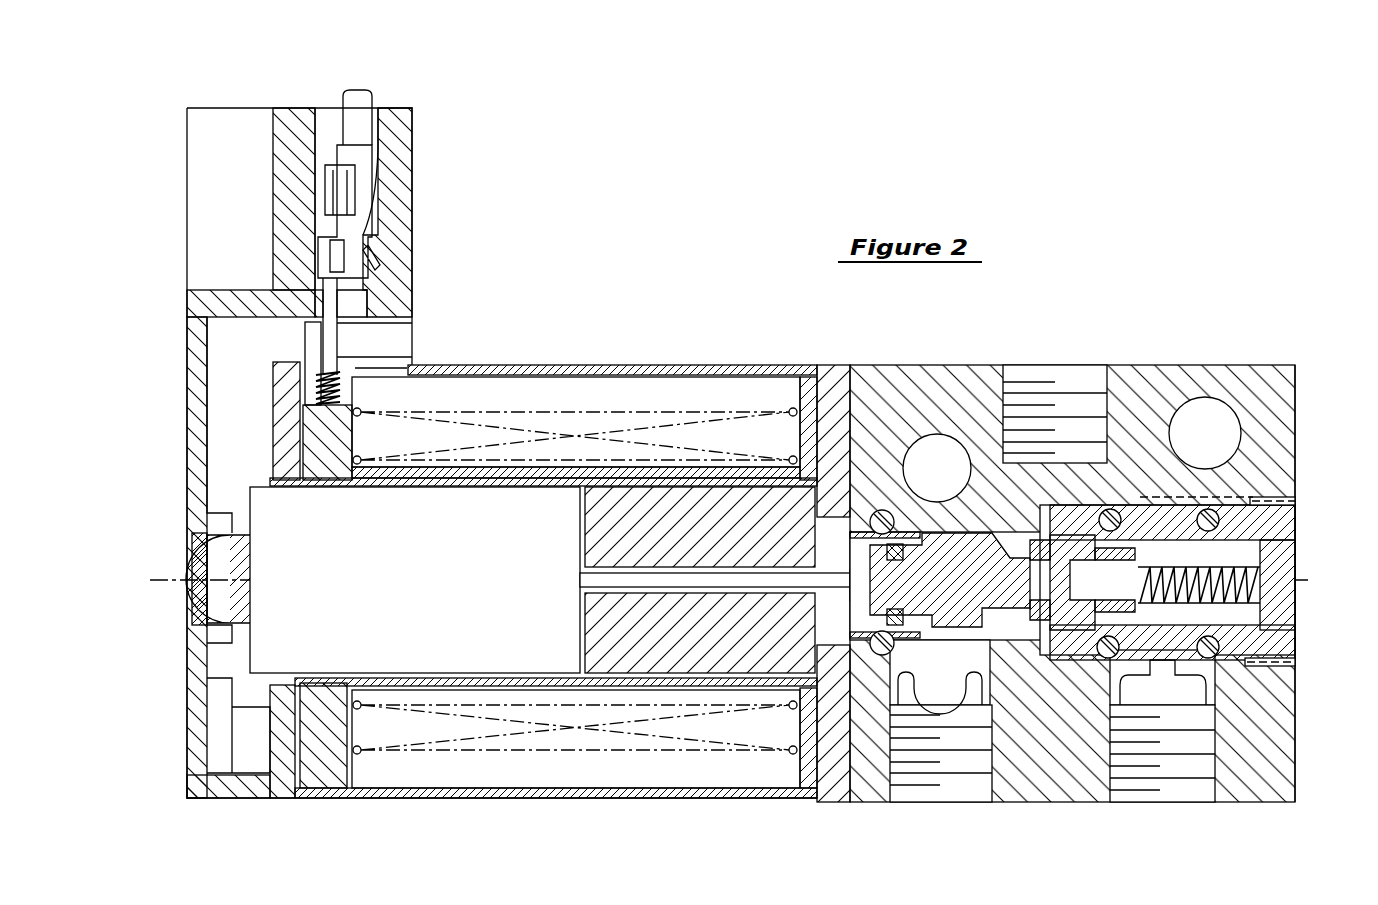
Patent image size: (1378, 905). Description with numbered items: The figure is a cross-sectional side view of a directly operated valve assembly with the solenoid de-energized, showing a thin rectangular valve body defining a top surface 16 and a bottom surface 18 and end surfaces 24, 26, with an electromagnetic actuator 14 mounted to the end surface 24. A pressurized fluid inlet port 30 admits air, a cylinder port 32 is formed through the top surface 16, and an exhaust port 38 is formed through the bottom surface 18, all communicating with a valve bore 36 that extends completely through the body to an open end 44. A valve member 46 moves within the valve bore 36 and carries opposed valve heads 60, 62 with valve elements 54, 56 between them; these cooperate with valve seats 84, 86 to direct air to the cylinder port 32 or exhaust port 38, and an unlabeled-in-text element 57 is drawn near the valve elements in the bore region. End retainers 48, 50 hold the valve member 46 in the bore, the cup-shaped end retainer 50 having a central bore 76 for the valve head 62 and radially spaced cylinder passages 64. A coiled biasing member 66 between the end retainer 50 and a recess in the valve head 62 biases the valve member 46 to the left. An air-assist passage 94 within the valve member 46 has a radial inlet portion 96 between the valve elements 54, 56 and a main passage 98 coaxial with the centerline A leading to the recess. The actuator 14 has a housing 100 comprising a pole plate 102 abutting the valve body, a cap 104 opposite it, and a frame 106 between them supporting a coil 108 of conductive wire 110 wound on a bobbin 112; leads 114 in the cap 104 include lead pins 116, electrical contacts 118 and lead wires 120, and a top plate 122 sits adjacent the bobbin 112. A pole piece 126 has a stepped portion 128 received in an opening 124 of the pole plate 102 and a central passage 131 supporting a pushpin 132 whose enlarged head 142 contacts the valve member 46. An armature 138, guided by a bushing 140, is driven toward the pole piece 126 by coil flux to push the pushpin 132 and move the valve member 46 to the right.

The electromagnetic actuator 14 is at (599, 360).
The top surface 16 is at (1272, 365).
The bottom surface 18 is at (1048, 800).
The end surface 24 is at (836, 365).
The end surface 26 is at (1295, 410).
The pressurized fluid inlet port 30 is at (942, 800).
The cylinder port 32 is at (1068, 385).
The valve bore 36 is at (935, 530).
The exhaust port 38 is at (1172, 800).
The open end 44 is at (1295, 500).
The valve member 46 is at (985, 620).
The end retainer 48 is at (940, 689).
The end retainer 50 is at (1295, 525).
The valve element 54 is at (1045, 590).
The valve element 56 is at (1075, 595).
The passage 57 is at (1070, 512).
The valve head 60 is at (940, 622).
The valve head 62 is at (1270, 655).
The cylinder passages 64 is at (1163, 682).
The biasing member 66 is at (1262, 600).
The central bore 76 is at (1260, 560).
The valve seat 84 is at (1025, 648).
The valve seat 86 is at (1090, 645).
The air-assist passage 94 is at (1035, 650).
The inlet portion 96 is at (1050, 528).
The main passage 98 is at (1110, 558).
The housing 100 is at (698, 360).
The pole plate 102 is at (833, 800).
The cap 104 is at (210, 800).
The solenoid can or frame 106 is at (410, 798).
The coil 108 is at (455, 385).
The conductive wire 110 is at (380, 480).
The bobbin 112 is at (332, 478).
The leads 114 is at (366, 344).
The lead pins 116 is at (310, 334).
The electrical contacts 118 is at (355, 292).
The lead wires 120 is at (372, 98).
The top plate 122 is at (285, 792).
The opening 124 is at (830, 645).
The pole piece 126 is at (680, 530).
The stepped portion 128 is at (815, 528).
The passage 131 is at (605, 596).
The pushpin 132 is at (790, 588).
The armature 138 is at (370, 576).
The bushing 140 is at (330, 678).
The enlarged head 142 is at (830, 604).
The centerline A is at (1340, 582).